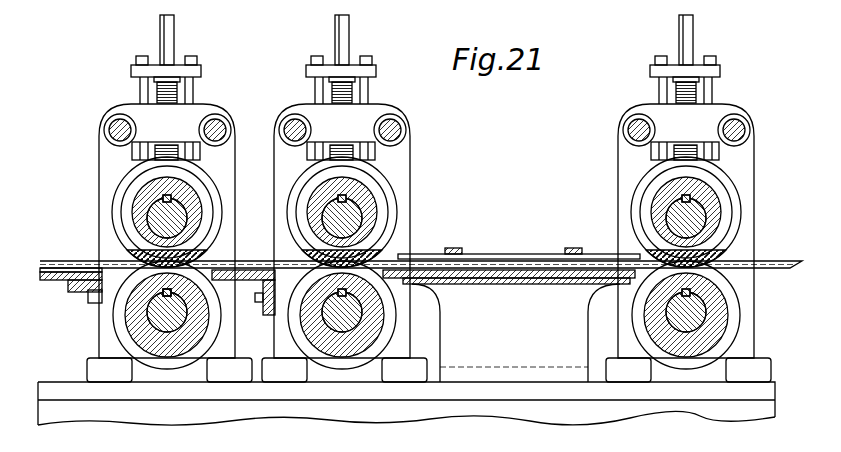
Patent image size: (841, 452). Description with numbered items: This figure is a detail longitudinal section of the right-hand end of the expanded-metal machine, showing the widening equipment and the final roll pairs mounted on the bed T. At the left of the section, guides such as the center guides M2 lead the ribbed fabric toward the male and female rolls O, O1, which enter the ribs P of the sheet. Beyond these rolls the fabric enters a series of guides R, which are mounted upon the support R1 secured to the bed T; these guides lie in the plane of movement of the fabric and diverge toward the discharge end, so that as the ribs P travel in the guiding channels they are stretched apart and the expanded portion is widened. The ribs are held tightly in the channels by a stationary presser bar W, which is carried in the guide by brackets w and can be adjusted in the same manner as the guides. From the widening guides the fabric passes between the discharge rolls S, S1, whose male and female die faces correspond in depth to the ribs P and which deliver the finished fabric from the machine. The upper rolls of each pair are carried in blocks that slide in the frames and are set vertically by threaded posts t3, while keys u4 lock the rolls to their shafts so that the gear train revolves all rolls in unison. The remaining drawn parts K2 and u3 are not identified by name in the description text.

The threaded post t3 is at (153, 92).
The guide K2 is at (50, 267).
The key u4 is at (166, 291).
The roll shaft u3 is at (155, 320).
The center guide M2 is at (253, 268).
The male roll O is at (393, 193).
The female roll O1 is at (393, 318).
The bracket w is at (455, 247).
The guide R is at (513, 248).
The presser bar W is at (533, 253).
The support R1 is at (537, 278).
The discharge roll S is at (740, 205).
The discharge roll S1 is at (728, 310).
The rib P is at (765, 258).
The bed T is at (705, 390).